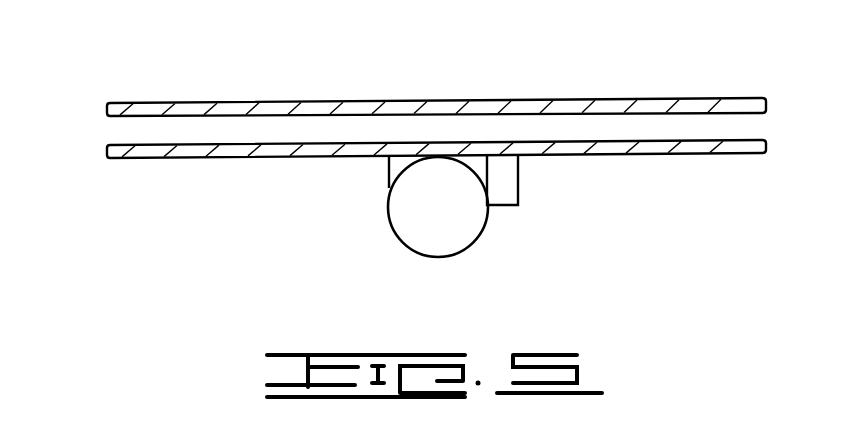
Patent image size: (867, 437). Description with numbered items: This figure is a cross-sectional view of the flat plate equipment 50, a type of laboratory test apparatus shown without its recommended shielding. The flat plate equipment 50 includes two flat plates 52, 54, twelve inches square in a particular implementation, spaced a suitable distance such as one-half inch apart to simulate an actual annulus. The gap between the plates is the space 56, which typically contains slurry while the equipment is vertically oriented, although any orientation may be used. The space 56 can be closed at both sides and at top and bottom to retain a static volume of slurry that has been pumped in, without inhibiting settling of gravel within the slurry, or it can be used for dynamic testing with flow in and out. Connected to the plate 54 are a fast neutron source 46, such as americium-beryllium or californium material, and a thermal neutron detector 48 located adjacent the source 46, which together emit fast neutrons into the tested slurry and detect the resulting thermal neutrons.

The flat plate equipment 50 is at (643, 63).
The flat plate 52 is at (155, 110).
The flat plate 54 is at (147, 158).
The space 56 is at (122, 130).
The source 46 is at (508, 186).
The thermal neutron detector 48 is at (412, 217).